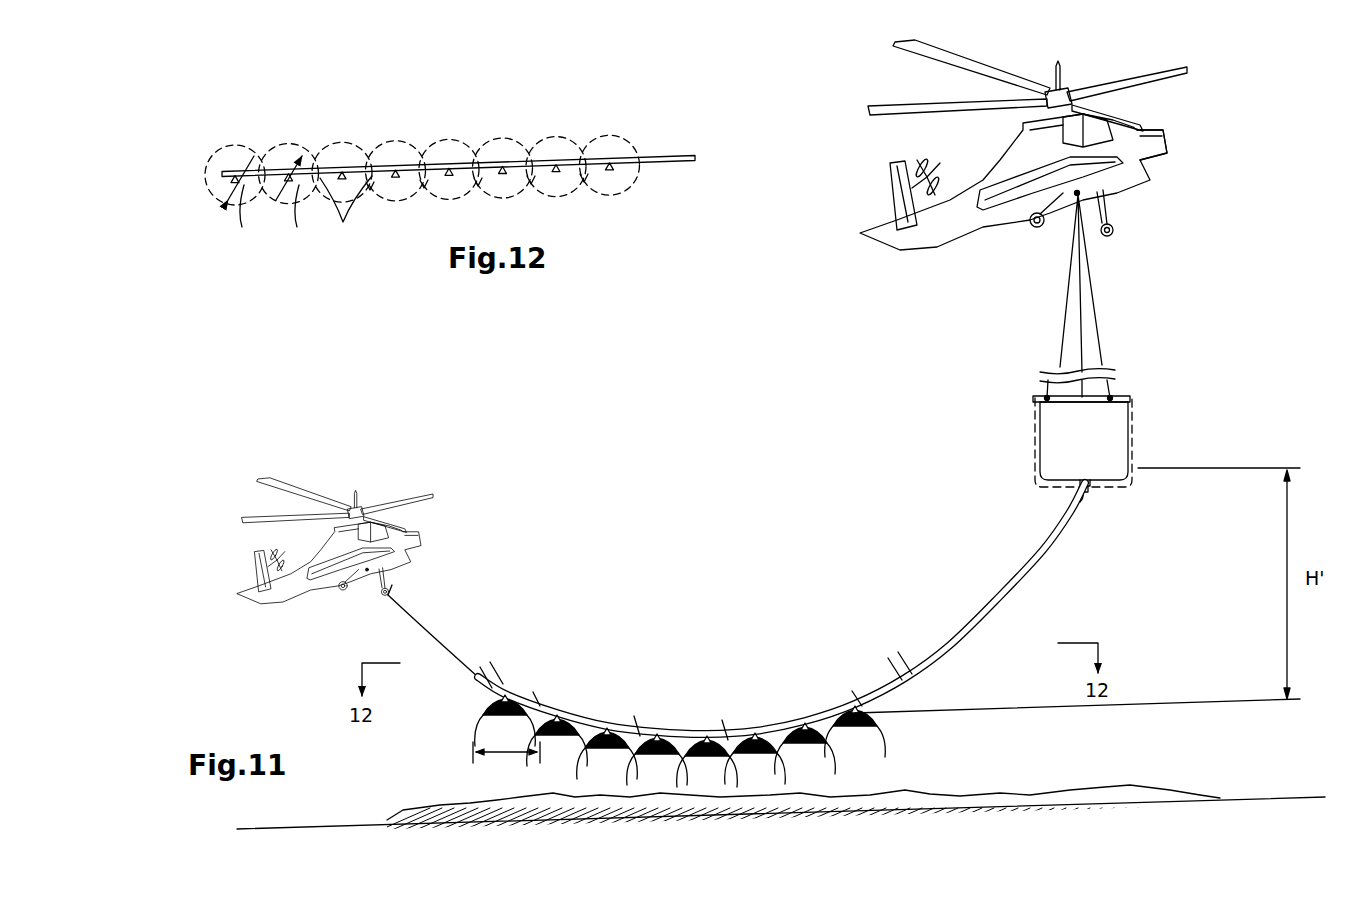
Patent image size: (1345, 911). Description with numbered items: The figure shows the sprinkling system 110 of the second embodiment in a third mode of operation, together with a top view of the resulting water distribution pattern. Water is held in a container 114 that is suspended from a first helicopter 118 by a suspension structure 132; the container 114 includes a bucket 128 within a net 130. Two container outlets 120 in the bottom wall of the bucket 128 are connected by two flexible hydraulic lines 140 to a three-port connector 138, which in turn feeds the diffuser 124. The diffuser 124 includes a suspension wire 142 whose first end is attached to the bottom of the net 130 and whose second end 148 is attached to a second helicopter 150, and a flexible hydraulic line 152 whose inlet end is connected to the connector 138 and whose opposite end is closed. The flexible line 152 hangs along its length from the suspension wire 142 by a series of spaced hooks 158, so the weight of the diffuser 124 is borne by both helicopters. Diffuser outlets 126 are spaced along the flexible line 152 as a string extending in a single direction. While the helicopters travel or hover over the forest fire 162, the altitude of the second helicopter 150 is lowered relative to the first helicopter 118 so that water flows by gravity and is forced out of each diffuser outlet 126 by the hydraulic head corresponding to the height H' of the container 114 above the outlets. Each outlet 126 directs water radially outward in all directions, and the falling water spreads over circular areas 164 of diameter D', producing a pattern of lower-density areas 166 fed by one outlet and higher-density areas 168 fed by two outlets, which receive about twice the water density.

In FIG. 11, the sprinkling system 110 is at (1092, 58).
In FIG. 11, the helicopter 118 is at (1138, 120).
In FIG. 11, the suspension structure 132 is at (1099, 306).
In FIG. 11, the container 114 is at (1155, 357).
In FIG. 11, the bucket 128 is at (1128, 424).
In FIG. 11, the net 130 is at (1133, 445).
In FIG. 11, the container outlets 120 is at (1093, 484).
In FIG. 11, the flexible hydraulic lines 140 is at (1090, 489).
In FIG. 11, the 3-port connector 138 is at (1087, 494).
In FIG. 11, the second helicopter 150 is at (400, 526).
In FIG. 11, the second end 148 is at (367, 568).
In FIG. 11, the suspension wire 142 is at (432, 628).
In FIG. 11, the flexible hydraulic line 152 is at (936, 666).
In FIG. 12, the flexible hydraulic line 152 is at (677, 156).
In FIG. 11, the hooks 158 is at (722, 723).
In FIG. 11, the diffuser outlets 126 is at (860, 711).
In FIG. 12, the diffuser outlets 126 is at (620, 170).
In FIG. 11, the circular areas 164 is at (479, 726).
In FIG. 12, the circular areas 164 is at (336, 145).
In FIG. 11, the diffuser 124 is at (1052, 625).
In FIG. 11, the forest fire 162 is at (960, 790).
In FIG. 12, the higher-density areas 168 is at (372, 180).
In FIG. 12, the lower-density areas 166 is at (447, 194).